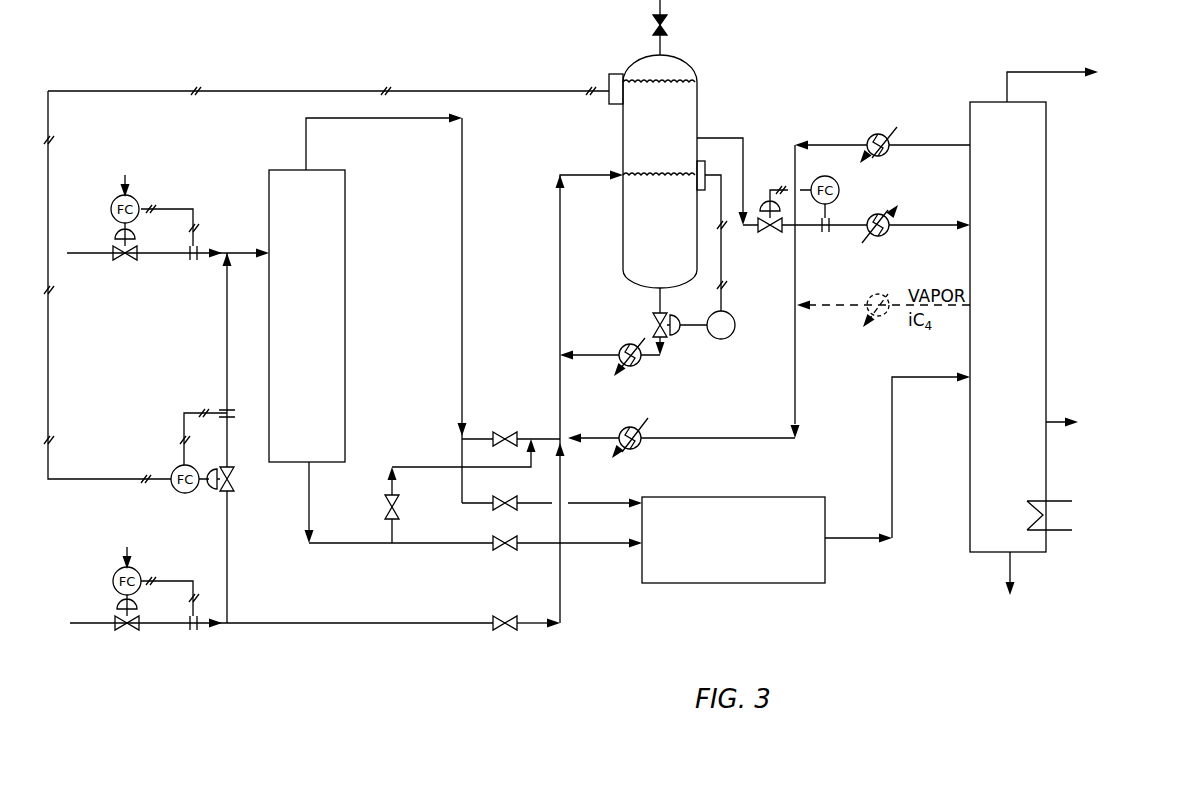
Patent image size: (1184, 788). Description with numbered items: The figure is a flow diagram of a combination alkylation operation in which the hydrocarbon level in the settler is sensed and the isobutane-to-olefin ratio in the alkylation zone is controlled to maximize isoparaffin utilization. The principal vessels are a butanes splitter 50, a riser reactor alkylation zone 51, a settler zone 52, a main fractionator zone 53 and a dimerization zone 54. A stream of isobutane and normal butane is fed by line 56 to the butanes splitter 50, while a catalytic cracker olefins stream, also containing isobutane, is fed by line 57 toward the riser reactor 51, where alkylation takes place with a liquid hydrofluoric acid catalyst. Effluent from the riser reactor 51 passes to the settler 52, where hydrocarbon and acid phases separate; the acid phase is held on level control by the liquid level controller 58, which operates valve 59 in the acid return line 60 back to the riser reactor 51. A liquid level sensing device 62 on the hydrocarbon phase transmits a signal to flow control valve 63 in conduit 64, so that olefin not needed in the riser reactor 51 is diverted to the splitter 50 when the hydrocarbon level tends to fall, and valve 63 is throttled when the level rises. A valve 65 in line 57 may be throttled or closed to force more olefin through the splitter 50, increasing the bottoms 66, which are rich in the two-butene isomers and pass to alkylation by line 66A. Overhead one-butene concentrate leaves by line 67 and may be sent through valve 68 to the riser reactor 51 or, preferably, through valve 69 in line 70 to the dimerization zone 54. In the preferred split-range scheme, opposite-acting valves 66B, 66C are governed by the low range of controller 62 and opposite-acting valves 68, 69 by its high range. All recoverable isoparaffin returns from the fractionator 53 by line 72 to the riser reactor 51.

The butanes splitter 50 is at (345, 408).
The riser reactor alkylation zone 51 is at (558, 213).
The settler zone 52 is at (697, 100).
The main fractionator zone 53 is at (976, 458).
The dimerization zone 54 is at (780, 496).
The isobutane and normal butane feed line 56 is at (206, 249).
The catalytic cracker olefins feed line 57 is at (207, 627).
The liquid level controller 58 is at (721, 339).
The acid return valve 59 is at (653, 319).
The acid return line 60 is at (653, 358).
The liquid level sensing device 62 is at (608, 98).
The flow control valve 63 is at (232, 492).
The conduit 64 is at (225, 345).
The valve in line 57 65 is at (515, 622).
The splitter bottoms 66 is at (339, 545).
The bottoms line to alkylation 66A is at (392, 489).
The bottoms valve 66B is at (398, 516).
The bottoms valve 66C is at (545, 528).
The splitter overhead line 67 is at (462, 308).
The overhead valve 68 is at (514, 436).
The dimerization line valve 69 is at (493, 510).
The line to dimerization zone 70 is at (585, 502).
The isoparaffin recycle line 72 is at (833, 144).